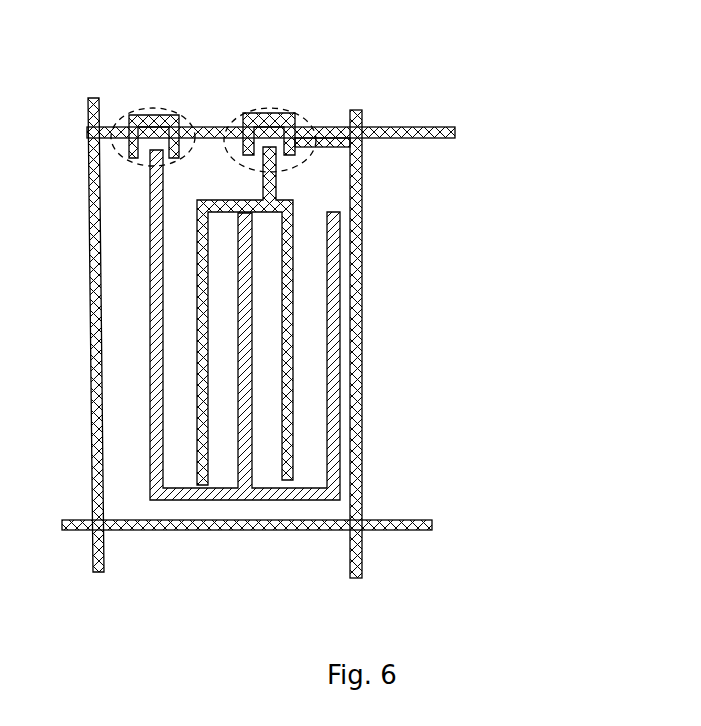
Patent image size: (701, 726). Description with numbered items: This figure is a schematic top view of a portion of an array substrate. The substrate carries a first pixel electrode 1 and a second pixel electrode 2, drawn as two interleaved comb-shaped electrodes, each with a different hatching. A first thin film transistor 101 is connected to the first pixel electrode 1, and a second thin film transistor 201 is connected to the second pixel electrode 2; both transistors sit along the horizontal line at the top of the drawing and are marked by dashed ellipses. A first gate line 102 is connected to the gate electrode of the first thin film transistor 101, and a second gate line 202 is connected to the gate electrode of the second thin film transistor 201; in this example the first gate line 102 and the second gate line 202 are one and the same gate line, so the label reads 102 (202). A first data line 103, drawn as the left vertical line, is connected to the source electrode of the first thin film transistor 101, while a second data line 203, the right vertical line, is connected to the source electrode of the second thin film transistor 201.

The first pixel electrode 1 is at (168, 498).
The second pixel electrode 2 is at (293, 230).
The first thin film transistor 101 is at (152, 108).
The first gate line 102 is at (415, 127).
The first data line 103 is at (100, 460).
The second thin film transistor 201 is at (292, 113).
The second gate line 202 is at (419, 88).
The second data line 203 is at (358, 372).